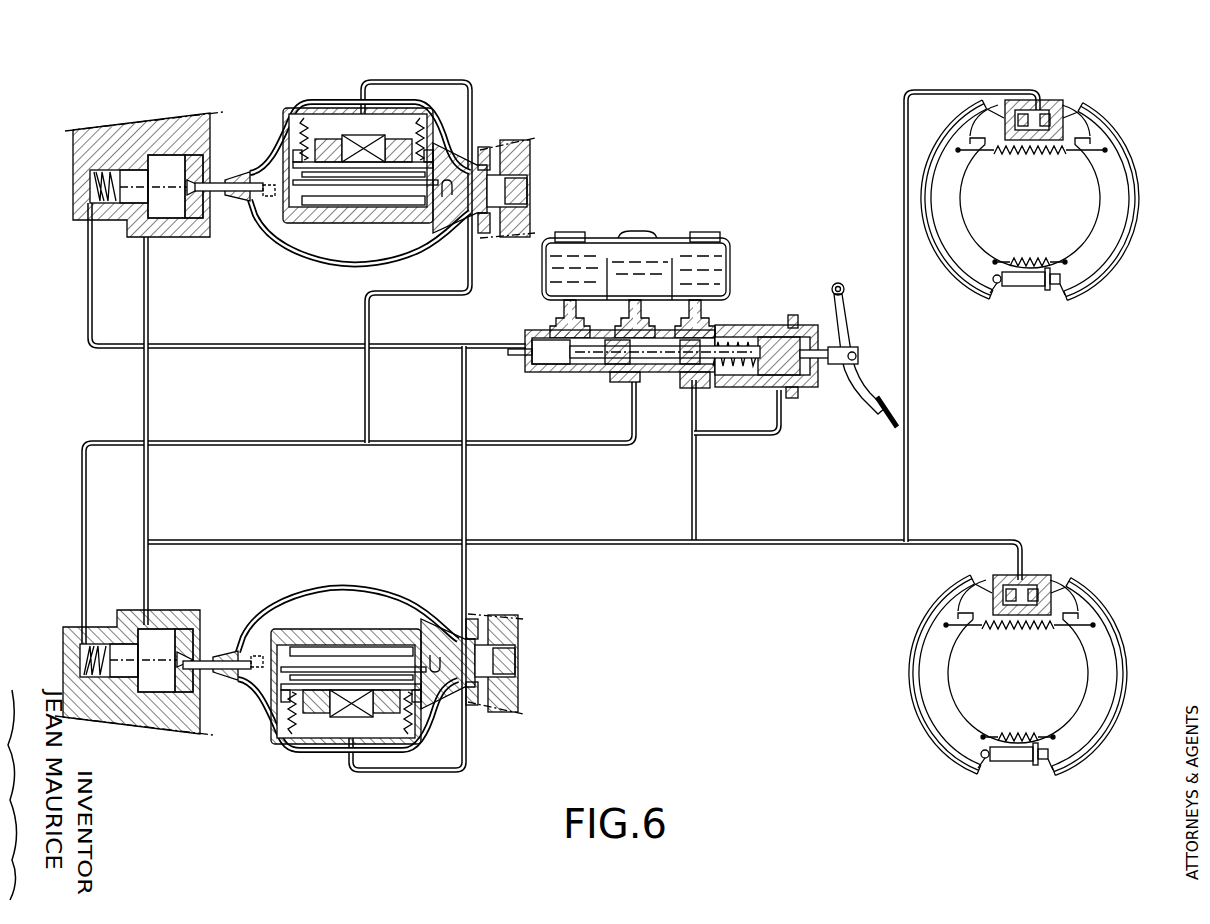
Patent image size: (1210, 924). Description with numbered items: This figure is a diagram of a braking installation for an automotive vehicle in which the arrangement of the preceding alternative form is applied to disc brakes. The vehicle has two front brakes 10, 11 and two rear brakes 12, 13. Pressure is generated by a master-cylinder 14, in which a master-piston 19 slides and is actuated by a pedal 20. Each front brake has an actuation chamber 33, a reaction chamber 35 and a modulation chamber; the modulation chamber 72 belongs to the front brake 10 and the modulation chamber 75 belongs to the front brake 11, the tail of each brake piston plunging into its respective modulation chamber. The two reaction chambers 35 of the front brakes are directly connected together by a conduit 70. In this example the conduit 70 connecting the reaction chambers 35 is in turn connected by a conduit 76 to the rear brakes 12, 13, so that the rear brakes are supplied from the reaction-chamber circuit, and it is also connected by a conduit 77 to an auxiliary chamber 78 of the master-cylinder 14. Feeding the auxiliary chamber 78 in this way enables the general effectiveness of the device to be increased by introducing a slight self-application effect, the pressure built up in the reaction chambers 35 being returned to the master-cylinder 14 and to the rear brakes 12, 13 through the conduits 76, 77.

The front brake 10 is at (288, 252).
The front brake 11 is at (277, 605).
The rear brake 12 is at (1140, 170).
The rear brake 13 is at (1102, 598).
The master-cylinder 14 is at (670, 335).
The master-piston 19 is at (628, 364).
The pedal 20 is at (880, 396).
The actuation chamber 33 is at (360, 162).
The reaction chamber 35 is at (170, 215).
The conduit 70 is at (152, 493).
The modulation chamber 72 is at (92, 185).
The modulation chamber 75 is at (80, 662).
The conduit 76 is at (738, 547).
The conduit 77 is at (740, 433).
The auxiliary chamber 78 is at (789, 396).